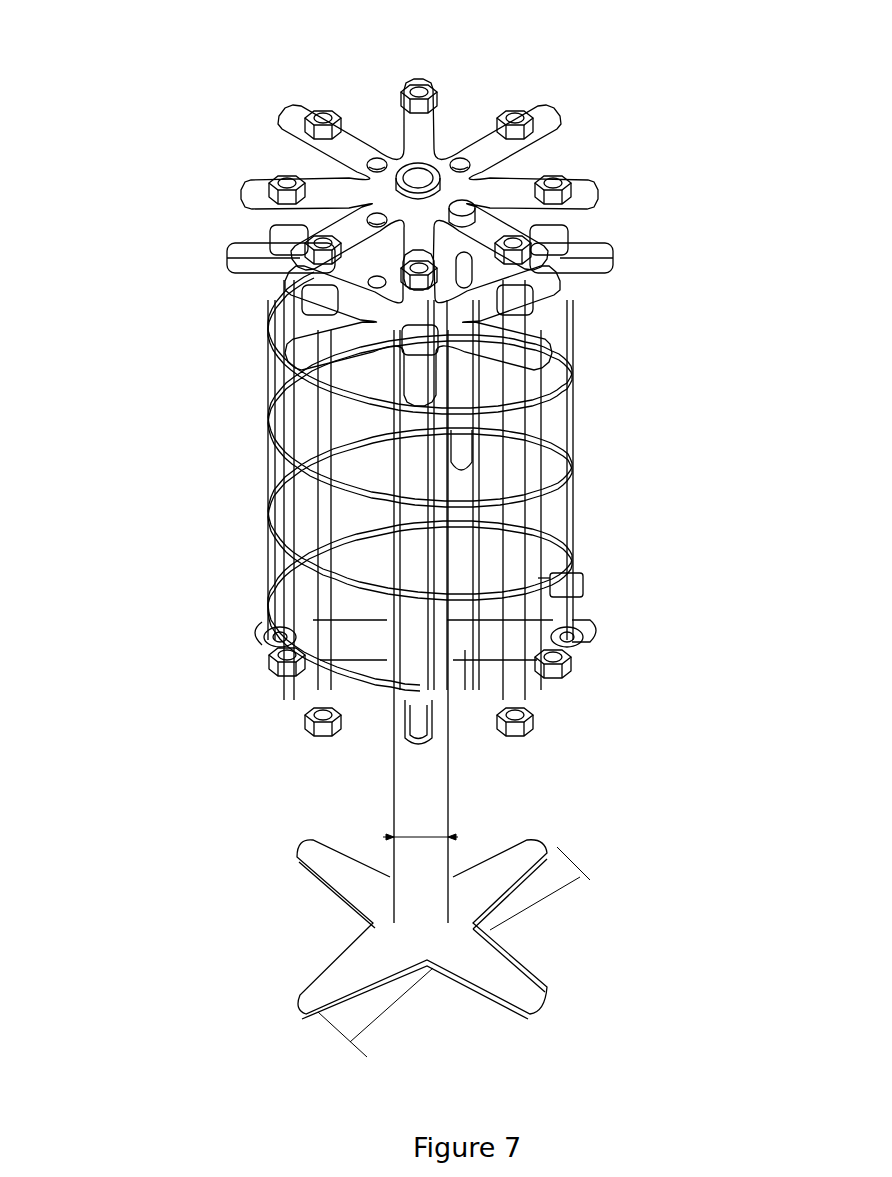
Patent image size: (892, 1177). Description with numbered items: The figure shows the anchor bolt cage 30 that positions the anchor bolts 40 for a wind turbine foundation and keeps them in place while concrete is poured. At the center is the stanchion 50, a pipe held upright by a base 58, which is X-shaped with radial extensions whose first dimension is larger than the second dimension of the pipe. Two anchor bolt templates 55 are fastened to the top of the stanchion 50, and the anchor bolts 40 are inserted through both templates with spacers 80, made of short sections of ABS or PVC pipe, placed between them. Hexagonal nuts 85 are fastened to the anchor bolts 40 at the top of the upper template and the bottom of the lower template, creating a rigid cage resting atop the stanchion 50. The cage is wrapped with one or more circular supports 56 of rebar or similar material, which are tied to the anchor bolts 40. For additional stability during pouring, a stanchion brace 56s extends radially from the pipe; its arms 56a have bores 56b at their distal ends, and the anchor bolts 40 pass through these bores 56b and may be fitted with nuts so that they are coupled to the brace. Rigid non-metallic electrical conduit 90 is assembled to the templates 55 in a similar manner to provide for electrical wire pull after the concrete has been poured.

The anchor bolt cage 30 is at (160, 130).
The hexagonal nuts 85 is at (498, 118).
The anchor bolt templates 55 is at (597, 247).
The spacers 80 is at (419, 290).
The circular supports 56 is at (263, 600).
The anchor bolts 40 is at (553, 475).
The electrical conduit 90 is at (577, 573).
The arms 56a is at (572, 636).
The bores 56b is at (262, 633).
The stanchion brace 56s is at (467, 690).
The stanchion 50 is at (413, 797).
The base 58 is at (493, 955).